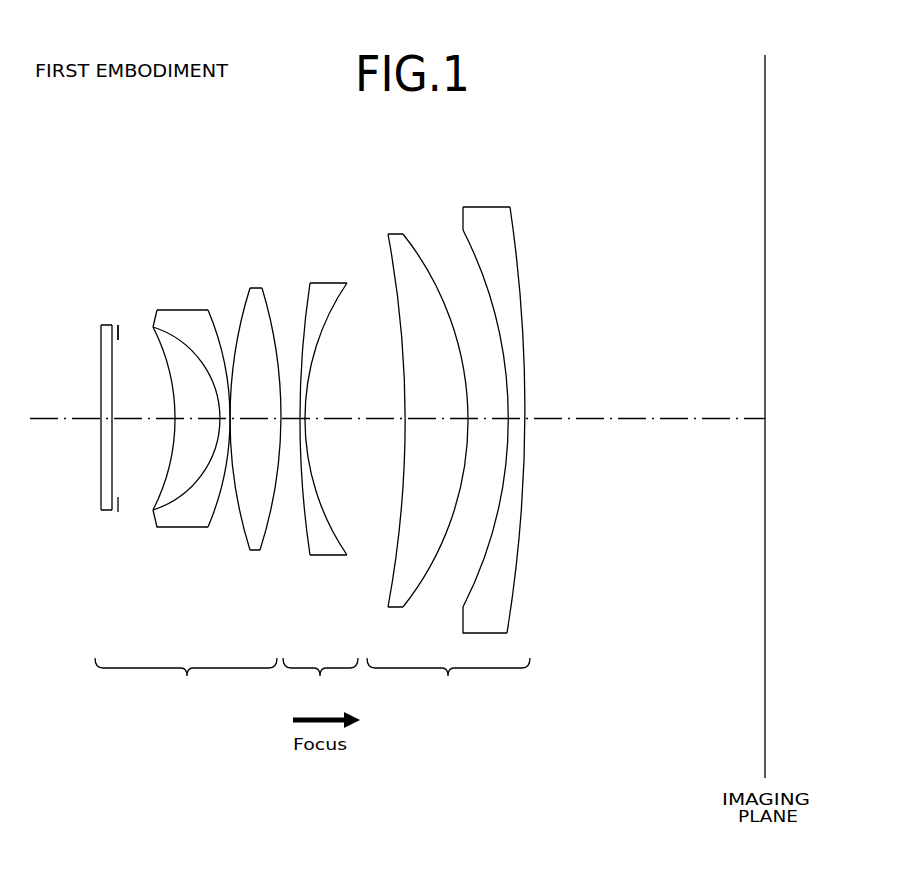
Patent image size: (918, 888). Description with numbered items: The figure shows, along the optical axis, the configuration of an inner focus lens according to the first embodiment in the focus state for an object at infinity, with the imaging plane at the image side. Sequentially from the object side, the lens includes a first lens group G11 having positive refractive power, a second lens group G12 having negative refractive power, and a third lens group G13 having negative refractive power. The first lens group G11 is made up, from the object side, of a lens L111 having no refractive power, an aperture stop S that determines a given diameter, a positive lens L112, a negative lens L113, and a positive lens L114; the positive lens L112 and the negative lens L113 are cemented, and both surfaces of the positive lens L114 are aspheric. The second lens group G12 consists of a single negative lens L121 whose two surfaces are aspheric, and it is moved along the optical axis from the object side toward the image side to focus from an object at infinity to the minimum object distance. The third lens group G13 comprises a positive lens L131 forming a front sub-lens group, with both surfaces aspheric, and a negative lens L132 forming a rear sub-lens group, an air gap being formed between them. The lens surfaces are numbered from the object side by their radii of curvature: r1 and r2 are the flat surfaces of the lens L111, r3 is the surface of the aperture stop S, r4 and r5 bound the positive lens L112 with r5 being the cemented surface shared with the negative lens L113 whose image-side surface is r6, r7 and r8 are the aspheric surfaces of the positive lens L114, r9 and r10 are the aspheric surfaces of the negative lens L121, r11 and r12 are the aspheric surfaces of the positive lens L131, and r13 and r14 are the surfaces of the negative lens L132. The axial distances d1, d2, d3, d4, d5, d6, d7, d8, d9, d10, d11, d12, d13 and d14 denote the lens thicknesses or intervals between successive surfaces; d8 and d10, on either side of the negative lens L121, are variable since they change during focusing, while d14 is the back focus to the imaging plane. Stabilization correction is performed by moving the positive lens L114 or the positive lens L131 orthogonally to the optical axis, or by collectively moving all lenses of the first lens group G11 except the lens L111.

The aperture stop S is at (90, 375).
The lens having no refractive power L111 is at (67, 400).
The positive lens L112 is at (168, 395).
The negative lens L113 is at (173, 381).
The positive lens L114 is at (244, 389).
The negative lens L121 is at (319, 388).
The positive lens L131 is at (405, 389).
The negative lens L132 is at (508, 389).
The radius of curvature of lens surface r1 is at (101, 385).
The radius of curvature of lens surface r2 is at (112, 358).
The radius of curvature of diaphragm surface r3 is at (116, 322).
The radius of curvature of lens surface r4 is at (173, 378).
The radius of curvature of lens surface r5 is at (166, 344).
The radius of curvature of lens surface r6 is at (213, 333).
The radius of curvature of lens surface r7 is at (240, 317).
The radius of curvature of lens surface r8 is at (268, 300).
The radius of curvature of lens surface r9 is at (307, 323).
The radius of curvature of lens surface r10 is at (313, 363).
The radius of curvature of lens surface r11 is at (398, 355).
The radius of curvature of lens surface r12 is at (413, 252).
The radius of curvature of lens surface r13 is at (488, 303).
The radius of curvature of lens surface r14 is at (519, 291).
The lens thickness d1 is at (100, 428).
The surface interval d2 is at (113, 425).
The surface interval d3 is at (142, 420).
The lens thickness d4 is at (221, 425).
The lens thickness d5 is at (198, 418).
The surface interval d6 is at (220, 420).
The lens thickness d7 is at (230, 420).
The variable surface interval d8 is at (283, 418).
The lens thickness d9 is at (305, 421).
The variable surface interval d10 is at (358, 418).
The lens thickness d11 is at (433, 420).
The surface interval d12 is at (487, 420).
The lens thickness d13 is at (515, 420).
The back focus d14 is at (680, 420).
The first lens group G11 is at (186, 684).
The second lens group G12 is at (320, 684).
The third lens group G13 is at (448, 684).